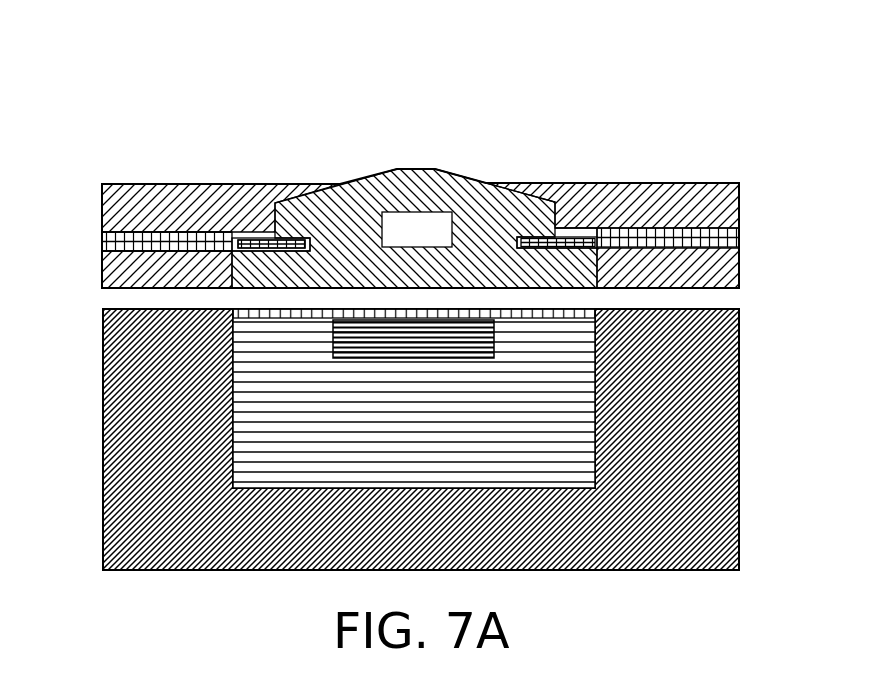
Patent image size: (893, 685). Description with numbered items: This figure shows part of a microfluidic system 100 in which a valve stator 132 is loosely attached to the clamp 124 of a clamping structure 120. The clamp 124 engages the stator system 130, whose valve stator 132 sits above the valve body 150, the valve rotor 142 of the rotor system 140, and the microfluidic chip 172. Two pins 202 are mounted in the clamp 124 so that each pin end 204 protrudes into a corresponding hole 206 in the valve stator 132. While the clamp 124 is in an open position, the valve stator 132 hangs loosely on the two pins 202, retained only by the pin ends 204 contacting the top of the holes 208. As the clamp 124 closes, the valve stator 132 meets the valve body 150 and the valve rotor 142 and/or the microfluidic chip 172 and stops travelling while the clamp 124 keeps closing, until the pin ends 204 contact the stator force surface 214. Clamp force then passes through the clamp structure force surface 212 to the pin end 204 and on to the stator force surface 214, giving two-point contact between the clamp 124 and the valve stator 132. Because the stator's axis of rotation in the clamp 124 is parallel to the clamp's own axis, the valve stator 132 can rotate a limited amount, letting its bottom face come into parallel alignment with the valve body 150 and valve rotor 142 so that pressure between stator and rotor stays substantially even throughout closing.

The microfluidic system 100 is at (118, 60).
The clamping structure 120 is at (260, 143).
The clamp 124 is at (295, 233).
The stator system 130 is at (364, 88).
The valve stator 132 is at (397, 242).
The rotor system 140 is at (511, 460).
The valve rotor 142 is at (437, 361).
The valve body 150 is at (638, 520).
The microfluidic chip 172 is at (463, 305).
The pins 202 is at (133, 232).
The pin end 204 is at (535, 235).
The hole 206 is at (535, 255).
The holes 208 is at (291, 184).
The clamp structure force surface 212 is at (258, 233).
The stator force surface 214 is at (253, 253).